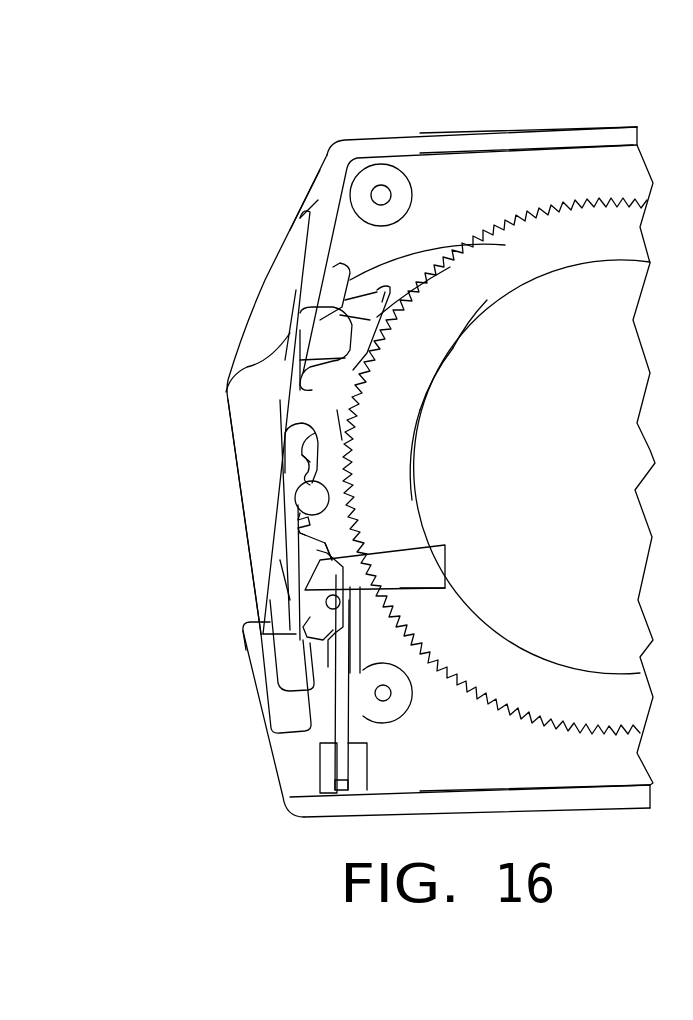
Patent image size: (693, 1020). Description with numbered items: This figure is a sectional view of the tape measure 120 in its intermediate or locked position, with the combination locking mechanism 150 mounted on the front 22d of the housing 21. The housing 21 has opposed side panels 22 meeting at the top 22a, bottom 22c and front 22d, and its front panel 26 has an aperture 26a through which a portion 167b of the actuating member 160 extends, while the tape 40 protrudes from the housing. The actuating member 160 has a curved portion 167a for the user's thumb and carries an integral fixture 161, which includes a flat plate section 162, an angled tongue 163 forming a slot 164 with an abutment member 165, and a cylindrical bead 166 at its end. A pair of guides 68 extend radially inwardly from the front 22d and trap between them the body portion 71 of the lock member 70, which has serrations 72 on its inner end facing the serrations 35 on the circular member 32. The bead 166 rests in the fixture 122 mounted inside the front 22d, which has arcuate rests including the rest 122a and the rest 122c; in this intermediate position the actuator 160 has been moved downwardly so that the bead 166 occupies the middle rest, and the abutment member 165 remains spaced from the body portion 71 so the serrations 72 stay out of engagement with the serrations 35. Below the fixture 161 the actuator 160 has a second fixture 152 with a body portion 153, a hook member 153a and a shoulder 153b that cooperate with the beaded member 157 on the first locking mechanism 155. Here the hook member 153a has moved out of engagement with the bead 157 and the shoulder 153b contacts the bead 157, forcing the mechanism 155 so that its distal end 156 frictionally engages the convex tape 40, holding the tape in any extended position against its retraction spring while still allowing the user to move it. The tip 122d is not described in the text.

The tape measure 120 is at (242, 94).
The combination locking mechanism 150 is at (169, 386).
The side panels 22 is at (616, 183).
The housing 21 is at (578, 124).
The top 22a is at (497, 140).
The bottom 22c is at (527, 801).
The front 22d is at (320, 184).
The guides 68 is at (480, 237).
The circular member 32 is at (572, 682).
The serrations 35 is at (420, 363).
The serrations 72 is at (463, 330).
The angled tongue 163 is at (438, 273).
The abutment member 165 is at (350, 282).
The fixture 161 is at (312, 268).
The curved portion 167a is at (278, 338).
The body portion 71 is at (333, 370).
The lock member 70 is at (308, 337).
The slot 164 is at (400, 425).
The flat plate section 162 is at (392, 468).
The cylindrical bead 166 is at (329, 498).
The fixture 122 is at (281, 493).
The arcuate rest 122a is at (300, 465).
The arcuate rest 122c is at (305, 543).
The latch tip 122d is at (365, 545).
The actuating member 160 is at (238, 473).
The portion 167b is at (328, 569).
The fixture 152 is at (335, 562).
The body portion 153 is at (420, 577).
The shoulder 153b is at (420, 590).
The beaded member 157 is at (340, 605).
The first locking mechanism 155 is at (353, 707).
The distal end 156 is at (353, 783).
The tape 40 is at (347, 797).
The front panel 26 is at (243, 664).
The aperture 26a is at (268, 626).
The hook member 153a is at (242, 633).